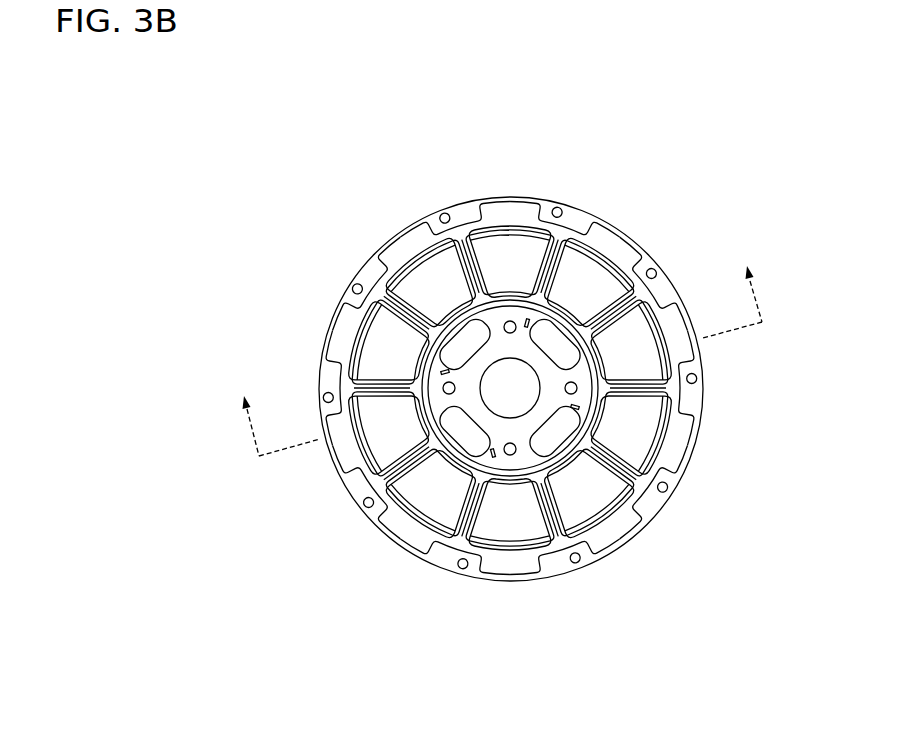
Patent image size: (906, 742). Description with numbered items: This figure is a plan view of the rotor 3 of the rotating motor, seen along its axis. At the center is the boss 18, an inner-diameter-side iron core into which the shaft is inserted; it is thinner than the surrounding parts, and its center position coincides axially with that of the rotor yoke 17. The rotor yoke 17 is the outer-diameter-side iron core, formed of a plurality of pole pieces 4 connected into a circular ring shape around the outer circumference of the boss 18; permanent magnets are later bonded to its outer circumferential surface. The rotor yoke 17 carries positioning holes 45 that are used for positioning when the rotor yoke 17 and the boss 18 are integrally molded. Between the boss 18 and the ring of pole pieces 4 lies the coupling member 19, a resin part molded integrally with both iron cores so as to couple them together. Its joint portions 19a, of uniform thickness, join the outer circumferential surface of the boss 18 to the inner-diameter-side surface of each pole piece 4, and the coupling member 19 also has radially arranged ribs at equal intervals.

The rotor 3 is at (306, 200).
The pole piece 4 is at (558, 202).
The rotor yoke 17 is at (555, 570).
The boss 18 is at (440, 413).
The coupling member 19 is at (673, 457).
The joint portion 19a is at (592, 500).
The positioning hole 45 is at (463, 570).